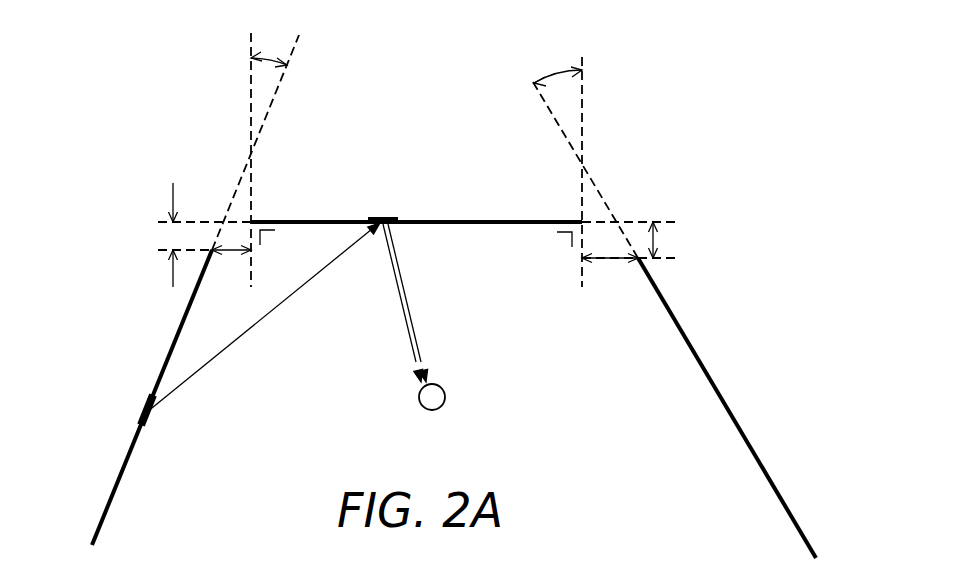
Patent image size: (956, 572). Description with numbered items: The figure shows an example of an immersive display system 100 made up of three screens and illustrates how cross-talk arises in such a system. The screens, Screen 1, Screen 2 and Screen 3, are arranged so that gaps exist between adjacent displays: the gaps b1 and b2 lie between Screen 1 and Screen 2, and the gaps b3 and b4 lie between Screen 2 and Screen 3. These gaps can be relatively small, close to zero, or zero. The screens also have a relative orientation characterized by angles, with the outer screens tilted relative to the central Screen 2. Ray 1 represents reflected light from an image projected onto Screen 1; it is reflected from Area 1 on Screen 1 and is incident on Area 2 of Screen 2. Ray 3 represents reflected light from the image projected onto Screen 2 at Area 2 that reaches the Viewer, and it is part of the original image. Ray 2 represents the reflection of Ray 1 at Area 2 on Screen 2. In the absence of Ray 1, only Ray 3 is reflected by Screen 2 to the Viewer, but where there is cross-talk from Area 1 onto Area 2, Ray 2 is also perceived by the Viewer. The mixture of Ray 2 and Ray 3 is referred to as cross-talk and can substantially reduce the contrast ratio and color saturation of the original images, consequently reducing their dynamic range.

The immersive display system 100 is at (669, 134).
The first screen Screen 1 is at (118, 464).
The second screen Screen 2 is at (472, 212).
The third screen Screen 3 is at (778, 402).
The area on Screen 1 Area 1 is at (130, 409).
The area on Screen 2 Area 2 is at (380, 208).
The reflected light ray from Screen 1 Ray 1 is at (265, 331).
The cross-talk reflected ray Ray 2 is at (390, 310).
The original image reflected ray Ray 3 is at (413, 278).
The viewer Viewer is at (433, 410).
The gap b1 is at (170, 235).
The gap b2 is at (231, 262).
The gap b3 is at (610, 273).
The gap b4 is at (667, 240).